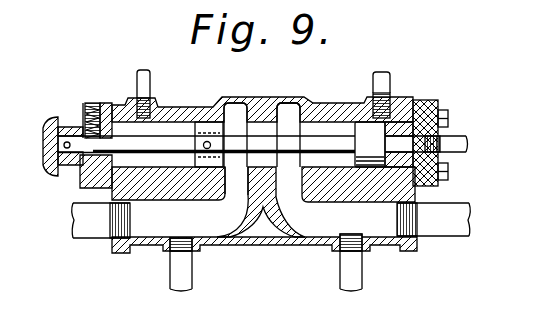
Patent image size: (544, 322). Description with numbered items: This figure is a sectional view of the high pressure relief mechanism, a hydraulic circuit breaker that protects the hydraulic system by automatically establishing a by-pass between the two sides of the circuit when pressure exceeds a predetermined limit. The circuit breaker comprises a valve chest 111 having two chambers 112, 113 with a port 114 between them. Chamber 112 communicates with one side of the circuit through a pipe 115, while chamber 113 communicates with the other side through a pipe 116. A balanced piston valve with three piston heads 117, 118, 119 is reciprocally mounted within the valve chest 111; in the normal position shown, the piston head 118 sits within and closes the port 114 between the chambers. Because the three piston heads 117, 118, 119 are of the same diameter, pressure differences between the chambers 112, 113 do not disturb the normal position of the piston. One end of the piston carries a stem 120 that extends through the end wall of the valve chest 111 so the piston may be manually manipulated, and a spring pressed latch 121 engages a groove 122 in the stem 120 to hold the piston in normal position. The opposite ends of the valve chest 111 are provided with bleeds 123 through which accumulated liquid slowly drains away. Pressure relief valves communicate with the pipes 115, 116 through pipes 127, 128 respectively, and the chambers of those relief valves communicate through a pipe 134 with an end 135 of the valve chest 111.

The valve chest 111 is at (328, 102).
The chamber 112 is at (238, 112).
The chamber 113 is at (291, 108).
The port 114 is at (288, 106).
The pipe 115 is at (88, 235).
The pipe 116 is at (456, 240).
The piston head 117 is at (206, 130).
The piston head 118 is at (236, 186).
The piston head 119 is at (388, 136).
The stem 120 is at (170, 128).
The spring pressed latch 121 is at (82, 122).
The groove 122 is at (80, 177).
The bleed 123 is at (143, 107).
The pipe 127 is at (193, 270).
The pipe 128 is at (363, 272).
The pipe 134 is at (464, 143).
The end of the valve chest 135 is at (440, 103).